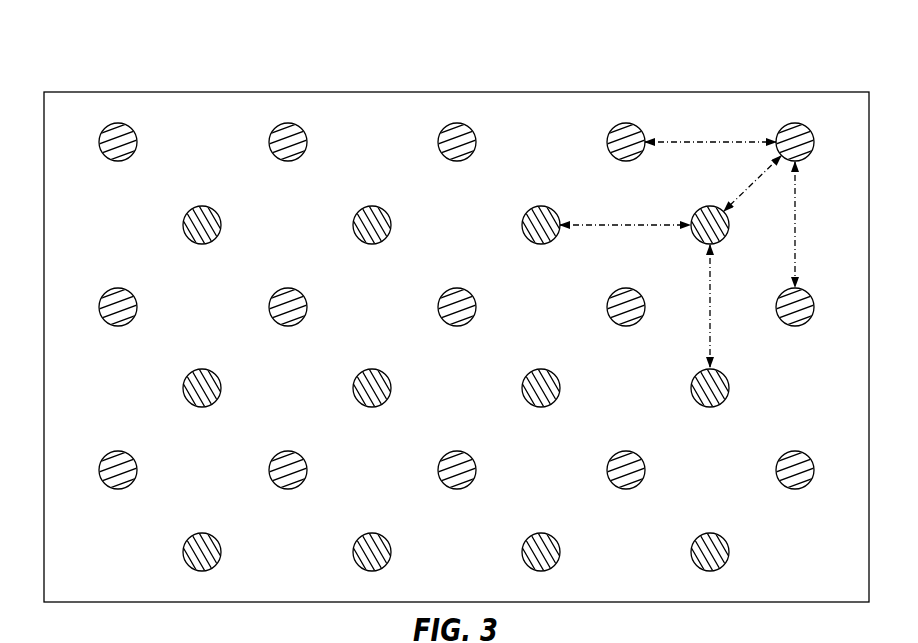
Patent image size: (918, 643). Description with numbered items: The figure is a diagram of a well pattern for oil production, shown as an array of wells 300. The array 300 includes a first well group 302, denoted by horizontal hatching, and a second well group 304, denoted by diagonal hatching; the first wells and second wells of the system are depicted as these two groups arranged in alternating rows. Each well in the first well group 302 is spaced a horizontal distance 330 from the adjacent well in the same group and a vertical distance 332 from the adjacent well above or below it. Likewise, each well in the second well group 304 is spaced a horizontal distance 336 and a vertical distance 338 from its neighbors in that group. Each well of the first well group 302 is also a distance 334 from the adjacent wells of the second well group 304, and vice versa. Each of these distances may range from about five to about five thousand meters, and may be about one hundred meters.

The array of wells 300 is at (147, 62).
The first well group 302 is at (435, 142).
The second well group 304 is at (350, 225).
The horizontal distance 330 is at (735, 142).
The vertical distance 332 is at (797, 198).
The distance 334 is at (741, 194).
The horizontal distance 336 is at (660, 225).
The vertical distance 338 is at (710, 322).